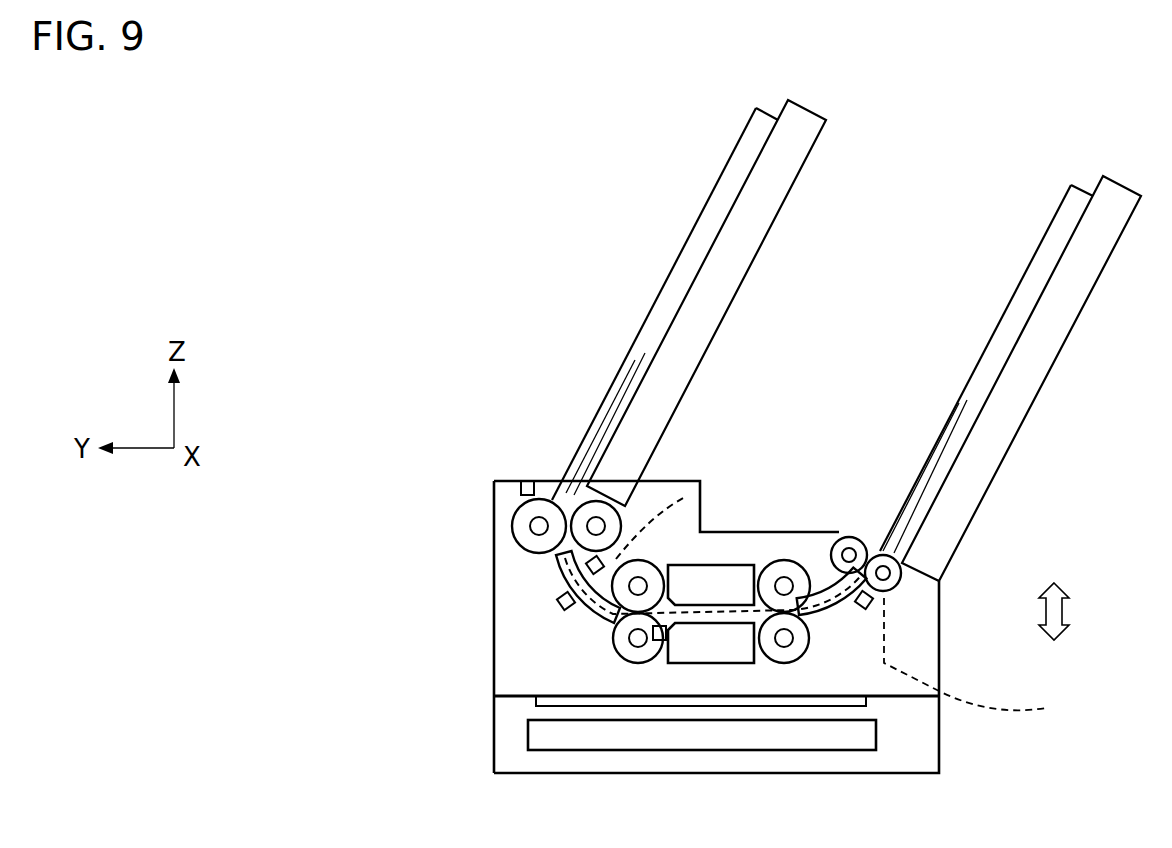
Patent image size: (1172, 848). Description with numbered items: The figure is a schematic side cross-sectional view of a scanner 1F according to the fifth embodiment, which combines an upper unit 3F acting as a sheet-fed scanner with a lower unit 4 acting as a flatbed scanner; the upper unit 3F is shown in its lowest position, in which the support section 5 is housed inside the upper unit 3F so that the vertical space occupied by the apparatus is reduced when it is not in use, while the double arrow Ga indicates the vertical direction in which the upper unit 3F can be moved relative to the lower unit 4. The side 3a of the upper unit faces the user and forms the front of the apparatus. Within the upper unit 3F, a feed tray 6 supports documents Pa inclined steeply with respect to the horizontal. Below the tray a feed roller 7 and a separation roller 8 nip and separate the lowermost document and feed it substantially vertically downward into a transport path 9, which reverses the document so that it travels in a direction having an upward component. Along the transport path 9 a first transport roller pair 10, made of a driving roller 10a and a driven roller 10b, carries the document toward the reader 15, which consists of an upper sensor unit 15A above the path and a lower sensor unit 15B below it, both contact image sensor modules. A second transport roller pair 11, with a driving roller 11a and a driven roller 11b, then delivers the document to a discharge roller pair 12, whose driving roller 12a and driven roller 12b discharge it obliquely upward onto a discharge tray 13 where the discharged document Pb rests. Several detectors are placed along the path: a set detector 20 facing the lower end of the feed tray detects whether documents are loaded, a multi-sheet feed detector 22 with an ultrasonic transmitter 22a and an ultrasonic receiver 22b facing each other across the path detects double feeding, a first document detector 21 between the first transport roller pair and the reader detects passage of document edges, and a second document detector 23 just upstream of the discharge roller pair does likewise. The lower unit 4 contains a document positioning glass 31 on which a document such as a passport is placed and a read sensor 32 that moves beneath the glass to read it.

The scanner 1F is at (445, 237).
The side 3a is at (492, 542).
The upper unit 3F is at (940, 665).
The lower unit 4 is at (938, 735).
The support section 5 is at (976, 662).
The feed tray 6 is at (690, 380).
The feed roller 7 is at (583, 488).
The separation roller 8 is at (513, 513).
The transport path 9 is at (684, 494).
The first transport roller pair 10 is at (544, 692).
The driving roller 10a is at (613, 648).
The driven roller 10b is at (613, 600).
The second transport roller pair 11 is at (818, 652).
The driving roller 11a is at (783, 660).
The driven roller 11b is at (783, 560).
The discharge roller pair 12 is at (889, 517).
The driving roller 12a is at (900, 575).
The driven roller 12b is at (837, 520).
The discharge tray 13 is at (1000, 470).
The reader 15 is at (716, 632).
The upper sensor unit 15A is at (703, 577).
The lower sensor unit 15B is at (707, 650).
The set detector 20 is at (527, 478).
The first document detector 21 is at (655, 638).
The multi-sheet feed detector 22 is at (519, 606).
The ultrasonic transmitter 22a is at (553, 558).
The ultrasonic receiver 22b is at (557, 605).
The second document detector 23 is at (875, 600).
The document positioning glass 31 is at (547, 705).
The read sensor 32 is at (577, 748).
The document to be fed Pa is at (670, 265).
The discharged document Pb is at (987, 342).
The gap direction Ga is at (1074, 611).